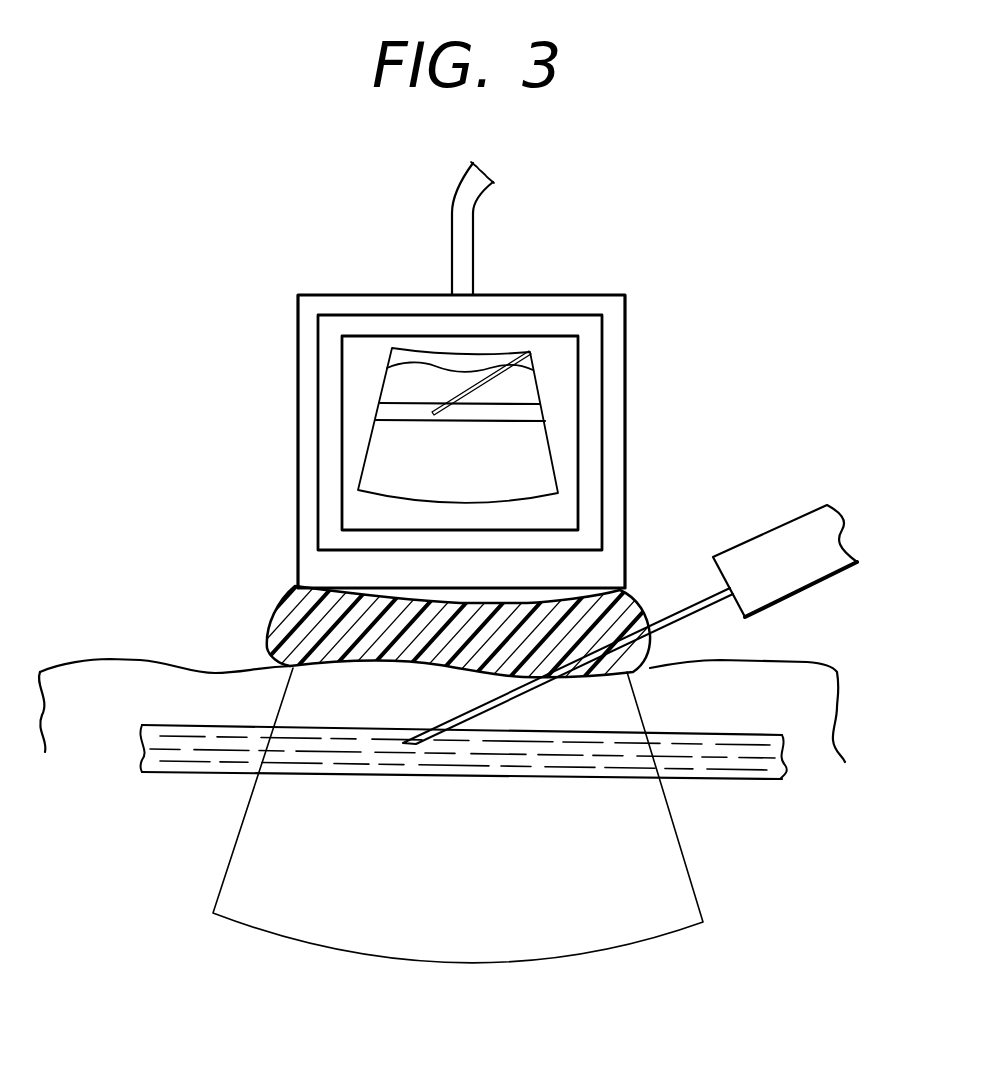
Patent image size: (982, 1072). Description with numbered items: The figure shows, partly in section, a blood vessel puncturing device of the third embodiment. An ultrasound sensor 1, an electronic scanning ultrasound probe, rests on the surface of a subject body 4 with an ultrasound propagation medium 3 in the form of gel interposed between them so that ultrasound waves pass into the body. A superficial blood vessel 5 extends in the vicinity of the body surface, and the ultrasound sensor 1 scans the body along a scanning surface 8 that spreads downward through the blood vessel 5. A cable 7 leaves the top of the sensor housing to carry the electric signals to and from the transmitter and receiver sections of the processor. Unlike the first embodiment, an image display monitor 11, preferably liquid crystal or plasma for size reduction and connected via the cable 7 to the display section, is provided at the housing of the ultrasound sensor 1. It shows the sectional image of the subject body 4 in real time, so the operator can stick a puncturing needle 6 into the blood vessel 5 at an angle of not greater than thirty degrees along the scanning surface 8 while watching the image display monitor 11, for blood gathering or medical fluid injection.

The ultrasound sensor 1 is at (617, 455).
The ultrasound propagation medium 3 is at (318, 628).
The subject body 4 is at (145, 673).
The superficial blood vessel 5 is at (737, 773).
The puncturing needle 6 is at (706, 600).
The cable 7 is at (466, 213).
The scanning surface 8 is at (248, 832).
The image display monitor 11 is at (557, 355).